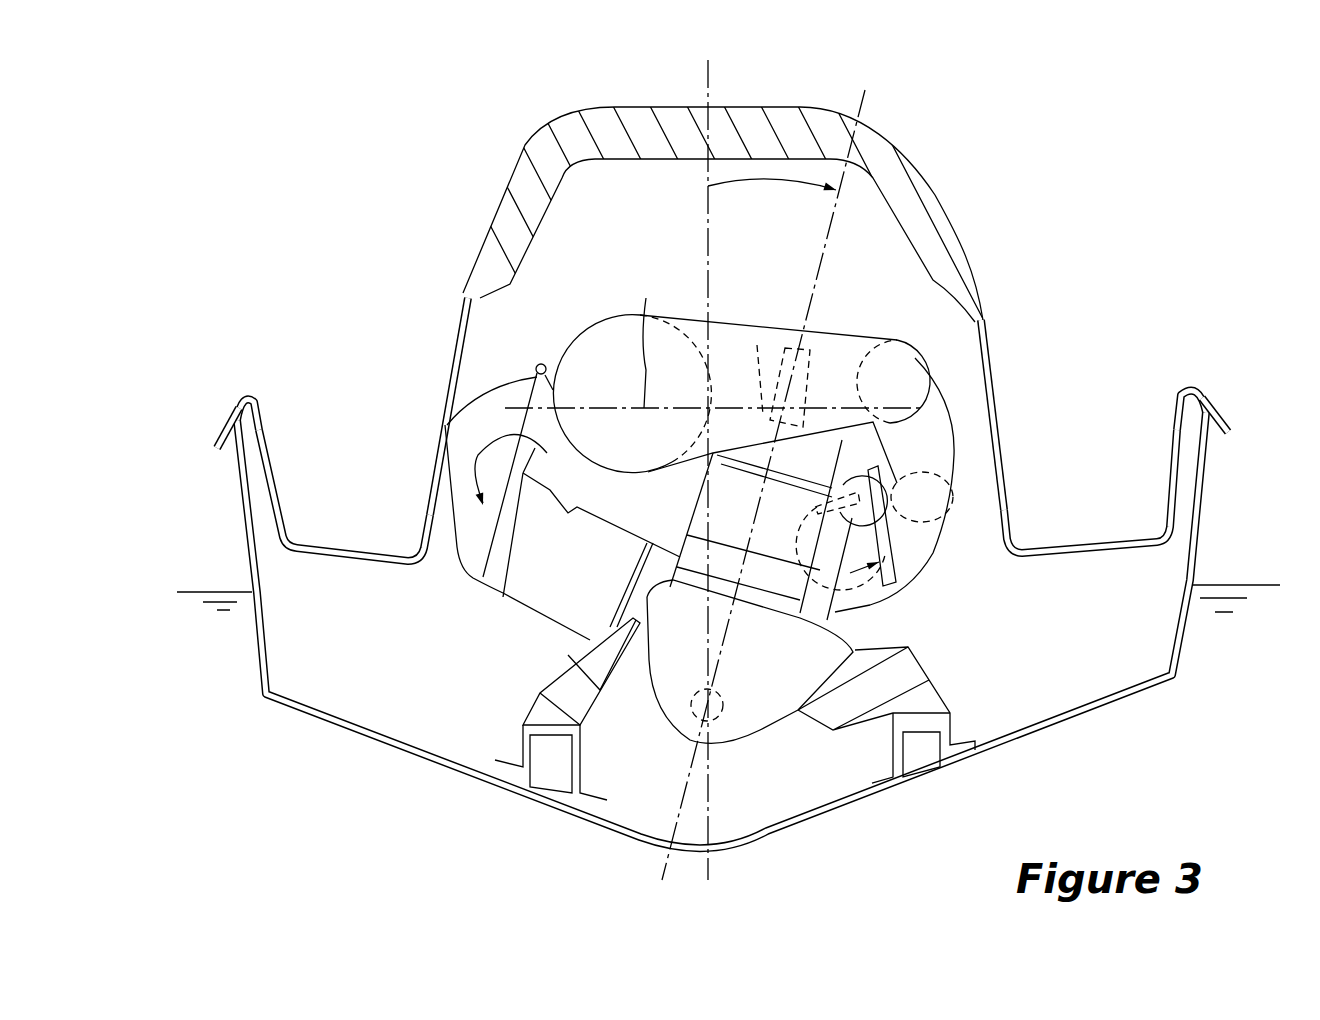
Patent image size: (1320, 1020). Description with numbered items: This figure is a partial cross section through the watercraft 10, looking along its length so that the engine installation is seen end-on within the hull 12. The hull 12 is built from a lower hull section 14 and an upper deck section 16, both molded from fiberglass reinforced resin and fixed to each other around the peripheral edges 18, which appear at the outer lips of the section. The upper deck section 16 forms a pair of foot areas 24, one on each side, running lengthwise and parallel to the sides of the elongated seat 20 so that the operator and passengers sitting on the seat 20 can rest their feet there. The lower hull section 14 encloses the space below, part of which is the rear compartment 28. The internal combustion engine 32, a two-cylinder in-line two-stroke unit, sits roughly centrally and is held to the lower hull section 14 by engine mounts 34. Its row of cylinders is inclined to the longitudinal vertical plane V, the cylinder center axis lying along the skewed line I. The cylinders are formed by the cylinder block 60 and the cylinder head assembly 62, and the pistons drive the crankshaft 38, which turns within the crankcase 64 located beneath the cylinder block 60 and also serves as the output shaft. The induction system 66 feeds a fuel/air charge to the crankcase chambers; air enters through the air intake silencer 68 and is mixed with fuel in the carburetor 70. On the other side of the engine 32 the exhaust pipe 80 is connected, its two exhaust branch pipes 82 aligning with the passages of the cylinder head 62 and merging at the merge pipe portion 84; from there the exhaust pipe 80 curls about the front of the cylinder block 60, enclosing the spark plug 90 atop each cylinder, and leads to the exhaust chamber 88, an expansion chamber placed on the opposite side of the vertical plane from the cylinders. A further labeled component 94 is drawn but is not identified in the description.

The watercraft 10 is at (1088, 290).
The hull 12 is at (764, 454).
The lower hull section 14 is at (1204, 522).
The upper deck section 16 is at (452, 365).
The peripheral edges 18 is at (1228, 420).
The elongated seat 20 is at (913, 205).
The foot areas 24 is at (337, 545).
The rear compartment 28 is at (545, 285).
The internal combustion engine 32 is at (642, 697).
The engine mounts 34 is at (897, 743).
The crankshaft 38 is at (685, 735).
The cylinder block 60 is at (880, 600).
The cylinder head assembly 62 is at (757, 338).
The crankcase 64 is at (737, 730).
The induction system 66 is at (473, 607).
The air intake silencer 68 is at (467, 533).
The carburetor 70 is at (550, 597).
The exhaust pipe 80 is at (981, 538).
The exhaust branch pipes 82 is at (927, 537).
The merge pipe portion 84 is at (945, 400).
The exhaust chamber 88 is at (592, 342).
The spark plug 90 is at (822, 340).
The hidden roller 94 is at (930, 337).